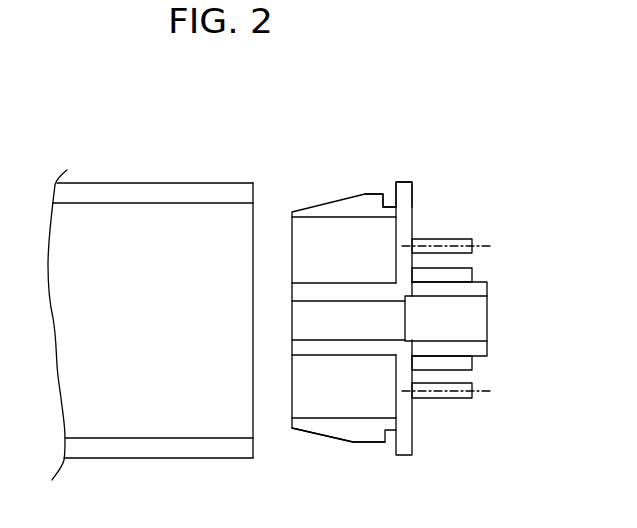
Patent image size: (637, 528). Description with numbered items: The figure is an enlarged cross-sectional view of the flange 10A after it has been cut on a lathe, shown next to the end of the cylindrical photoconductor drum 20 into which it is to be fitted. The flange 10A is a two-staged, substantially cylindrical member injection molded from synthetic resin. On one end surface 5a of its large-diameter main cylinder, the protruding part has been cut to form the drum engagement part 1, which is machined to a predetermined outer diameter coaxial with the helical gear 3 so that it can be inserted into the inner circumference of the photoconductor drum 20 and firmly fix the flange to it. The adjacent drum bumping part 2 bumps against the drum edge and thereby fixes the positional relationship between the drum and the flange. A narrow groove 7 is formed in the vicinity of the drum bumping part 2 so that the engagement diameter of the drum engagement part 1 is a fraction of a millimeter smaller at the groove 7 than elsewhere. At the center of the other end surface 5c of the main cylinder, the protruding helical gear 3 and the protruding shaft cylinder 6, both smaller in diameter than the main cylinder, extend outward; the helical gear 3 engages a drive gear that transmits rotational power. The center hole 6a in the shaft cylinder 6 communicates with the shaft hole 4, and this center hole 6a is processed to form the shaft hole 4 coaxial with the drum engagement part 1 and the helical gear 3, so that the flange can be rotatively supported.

The flange 10A is at (411, 289).
The drum engagement part 1 is at (373, 442).
The drum bumping part 2 is at (404, 456).
The helical gear 3 is at (437, 239).
The shaft hole 4 is at (385, 302).
The end surface 5a is at (323, 437).
The other end surface 5c is at (412, 181).
The shaft cylinder 6 is at (477, 282).
The center hole 6a is at (467, 297).
The groove 7 is at (388, 203).
The photoconductor drum 20 is at (212, 458).